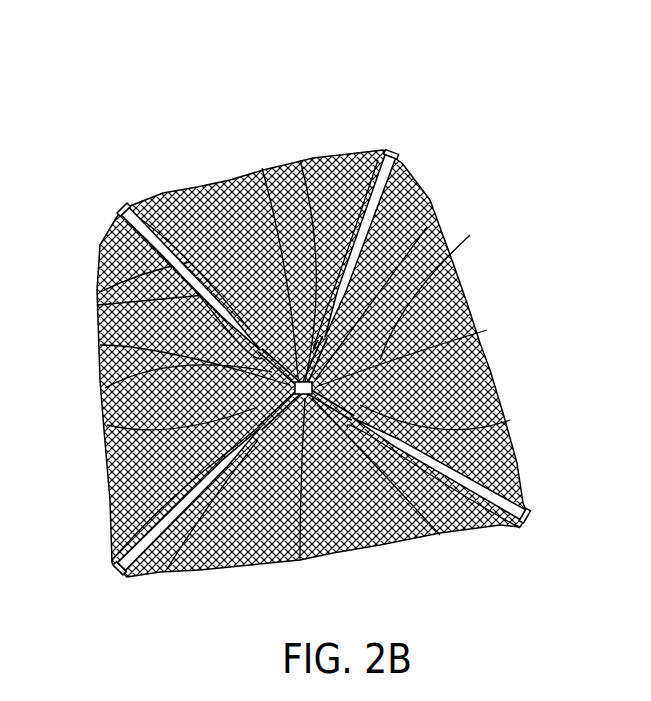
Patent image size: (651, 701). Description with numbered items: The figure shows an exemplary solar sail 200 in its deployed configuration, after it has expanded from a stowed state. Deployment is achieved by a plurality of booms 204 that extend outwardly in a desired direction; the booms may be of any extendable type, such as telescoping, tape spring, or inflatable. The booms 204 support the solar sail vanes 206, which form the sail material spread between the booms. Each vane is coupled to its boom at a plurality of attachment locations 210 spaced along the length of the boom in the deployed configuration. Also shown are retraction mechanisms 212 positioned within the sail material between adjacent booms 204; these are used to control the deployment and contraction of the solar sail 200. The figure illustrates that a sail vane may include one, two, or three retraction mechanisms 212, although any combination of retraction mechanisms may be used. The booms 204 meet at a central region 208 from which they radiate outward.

The solar sail 200 is at (285, 307).
The booms 204 is at (355, 165).
The solar sail vanes 206 is at (307, 250).
The central hub 208 is at (312, 395).
The attachment locations 210 is at (182, 292).
The retraction mechanisms 212 is at (107, 425).